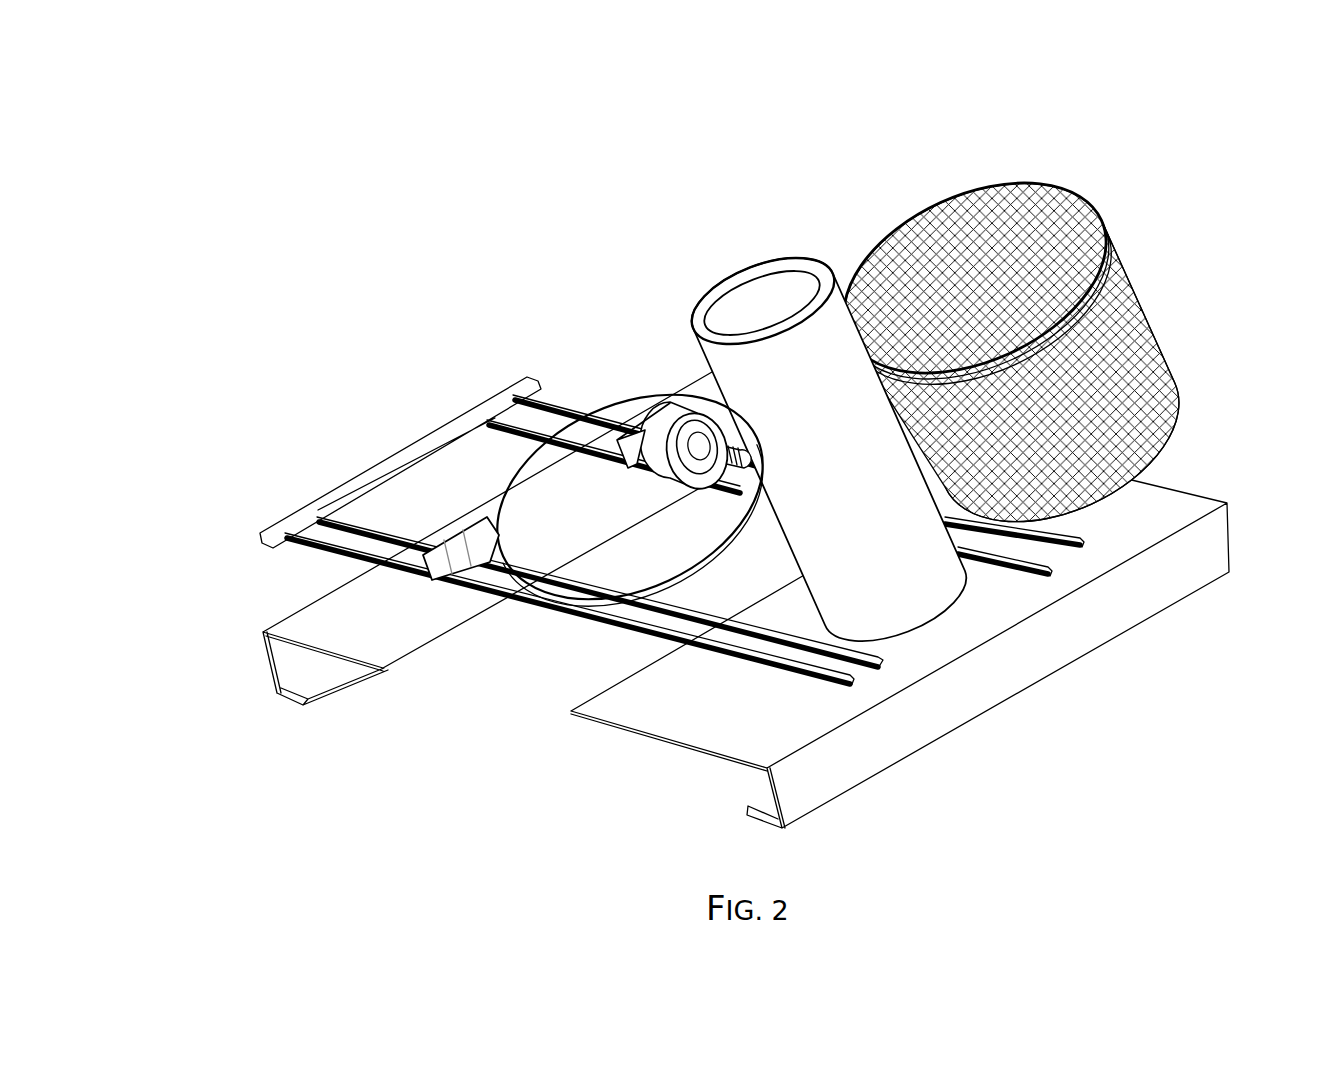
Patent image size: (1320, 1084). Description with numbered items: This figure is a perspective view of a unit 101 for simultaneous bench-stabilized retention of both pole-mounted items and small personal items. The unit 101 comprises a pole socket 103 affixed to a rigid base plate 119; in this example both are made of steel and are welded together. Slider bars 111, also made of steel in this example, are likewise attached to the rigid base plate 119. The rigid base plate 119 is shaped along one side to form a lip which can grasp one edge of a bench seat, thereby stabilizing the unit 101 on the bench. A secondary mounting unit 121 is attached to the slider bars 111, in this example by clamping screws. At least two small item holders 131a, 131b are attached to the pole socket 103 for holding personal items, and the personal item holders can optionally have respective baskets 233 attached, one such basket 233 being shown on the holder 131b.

The unit 101 is at (330, 127).
The pole socket 103 is at (816, 232).
The slider bars 111 is at (378, 392).
The rigid base plate 119 is at (988, 740).
The secondary mounting unit 121 is at (232, 617).
The small item holder 131a is at (665, 571).
The small item holder 131b is at (1107, 238).
The basket 233 is at (1158, 327).